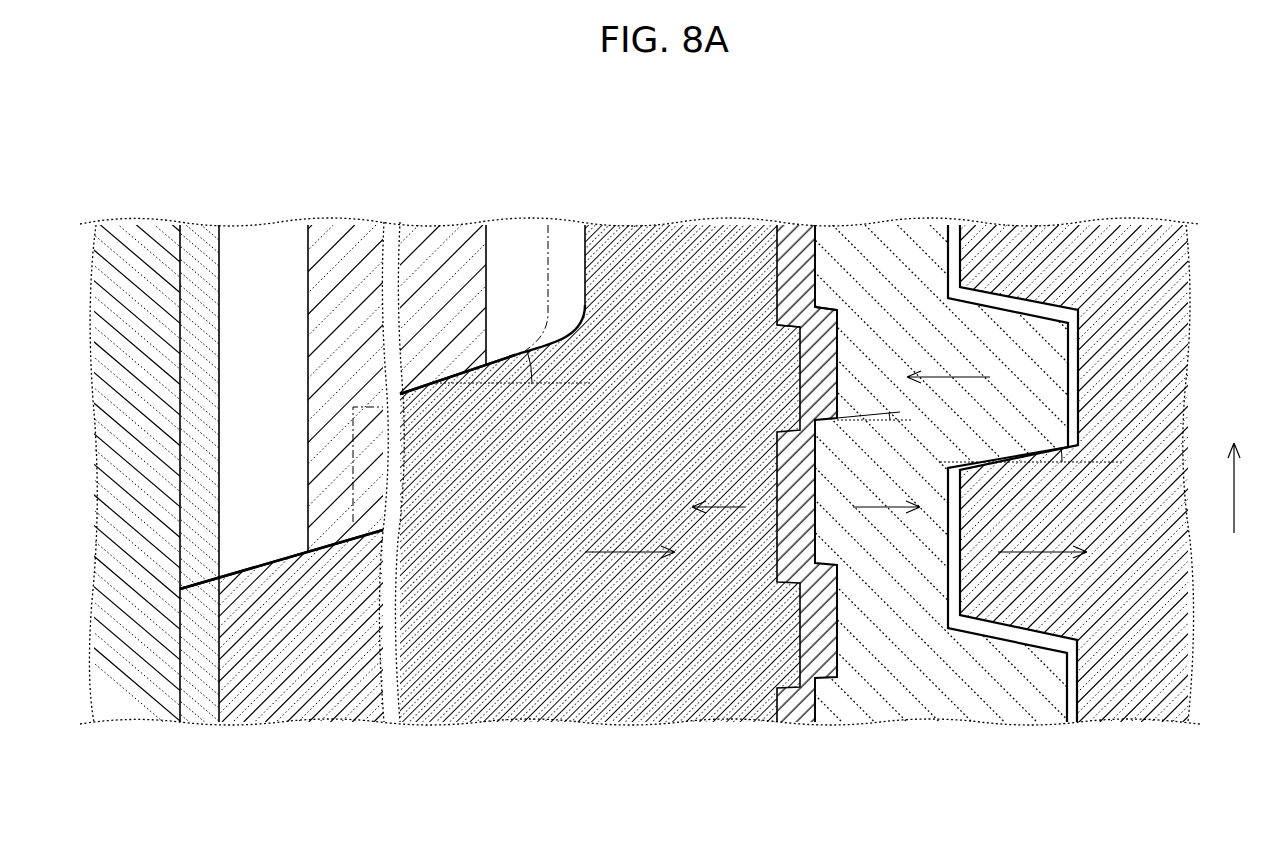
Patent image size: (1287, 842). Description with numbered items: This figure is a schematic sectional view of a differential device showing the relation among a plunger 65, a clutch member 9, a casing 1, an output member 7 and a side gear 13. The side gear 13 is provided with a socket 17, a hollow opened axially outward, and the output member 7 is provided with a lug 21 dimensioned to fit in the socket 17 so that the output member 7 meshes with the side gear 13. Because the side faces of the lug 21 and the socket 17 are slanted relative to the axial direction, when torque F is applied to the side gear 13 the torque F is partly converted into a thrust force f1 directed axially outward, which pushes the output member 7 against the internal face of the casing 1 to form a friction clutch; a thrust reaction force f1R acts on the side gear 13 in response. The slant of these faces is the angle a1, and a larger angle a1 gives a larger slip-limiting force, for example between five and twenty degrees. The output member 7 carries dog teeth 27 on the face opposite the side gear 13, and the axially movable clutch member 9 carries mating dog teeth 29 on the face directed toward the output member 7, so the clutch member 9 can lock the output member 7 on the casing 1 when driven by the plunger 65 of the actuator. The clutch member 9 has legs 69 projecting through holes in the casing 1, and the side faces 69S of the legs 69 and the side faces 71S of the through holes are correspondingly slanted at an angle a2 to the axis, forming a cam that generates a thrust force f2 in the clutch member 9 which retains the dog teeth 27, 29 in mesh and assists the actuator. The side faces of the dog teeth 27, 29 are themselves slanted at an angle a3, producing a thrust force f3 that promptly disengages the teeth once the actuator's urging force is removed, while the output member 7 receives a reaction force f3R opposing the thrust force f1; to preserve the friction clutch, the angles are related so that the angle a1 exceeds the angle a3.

The casing 1 is at (355, 240).
The output member 7 is at (897, 243).
The clutch member 9 is at (633, 243).
The side gear 13 is at (1145, 240).
The socket 17 is at (988, 303).
The lug 21 is at (1042, 313).
The dog teeth 27 is at (800, 255).
The dog teeth 29 is at (766, 258).
The plunger 65 is at (163, 240).
The leg 69 is at (263, 680).
The side face of leg 69S is at (260, 563).
The side face of through hole 71S is at (422, 388).
The angle a1 is at (1064, 456).
The angle a2 is at (531, 362).
The angle a3 is at (893, 420).
The thrust force f1 is at (948, 390).
The thrust reaction force f1R is at (1042, 565).
The thrust force f2 is at (630, 565).
The thrust force f3 is at (718, 521).
The reaction force f3R is at (886, 519).
The torque F is at (1244, 488).